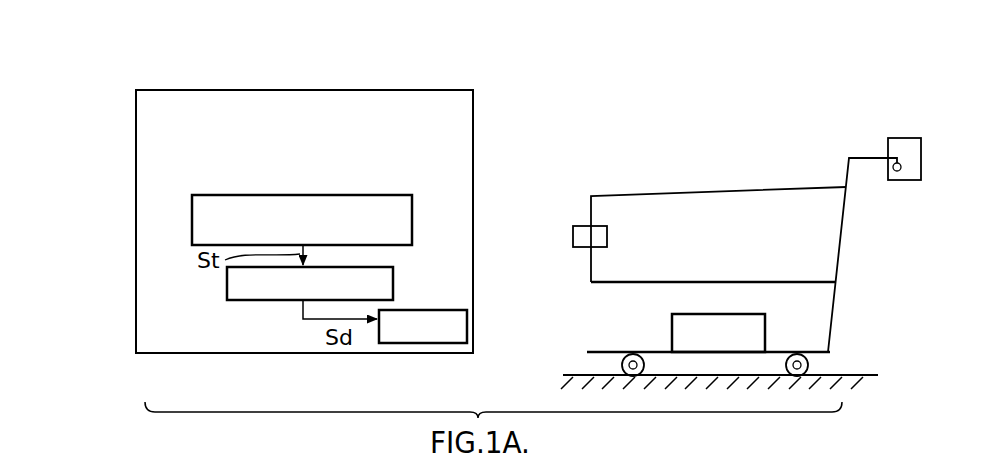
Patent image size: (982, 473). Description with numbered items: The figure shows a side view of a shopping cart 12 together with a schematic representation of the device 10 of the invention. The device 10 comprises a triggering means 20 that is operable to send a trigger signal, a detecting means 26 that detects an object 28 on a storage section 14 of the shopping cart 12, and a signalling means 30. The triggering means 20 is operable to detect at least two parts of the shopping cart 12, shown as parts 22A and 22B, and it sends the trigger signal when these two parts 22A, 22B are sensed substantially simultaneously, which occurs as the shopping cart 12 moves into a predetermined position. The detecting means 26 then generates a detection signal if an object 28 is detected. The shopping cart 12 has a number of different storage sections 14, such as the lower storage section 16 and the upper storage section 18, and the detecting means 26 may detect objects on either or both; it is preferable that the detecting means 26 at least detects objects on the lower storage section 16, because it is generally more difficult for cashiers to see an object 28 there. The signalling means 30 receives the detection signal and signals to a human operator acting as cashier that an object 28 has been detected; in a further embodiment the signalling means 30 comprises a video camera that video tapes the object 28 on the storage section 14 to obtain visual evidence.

The device 10 is at (116, 79).
The shopping cart 12 is at (731, 227).
The storage section 14 is at (759, 271).
The lower storage section 16 is at (817, 339).
The upper storage section 18 is at (600, 277).
The triggering means 20 is at (186, 217).
The part of the shopping cart 22A is at (916, 132).
The part of the shopping cart 22B is at (567, 227).
The detecting means 26 is at (224, 283).
The object 28 is at (669, 318).
The signalling means 30 is at (411, 348).